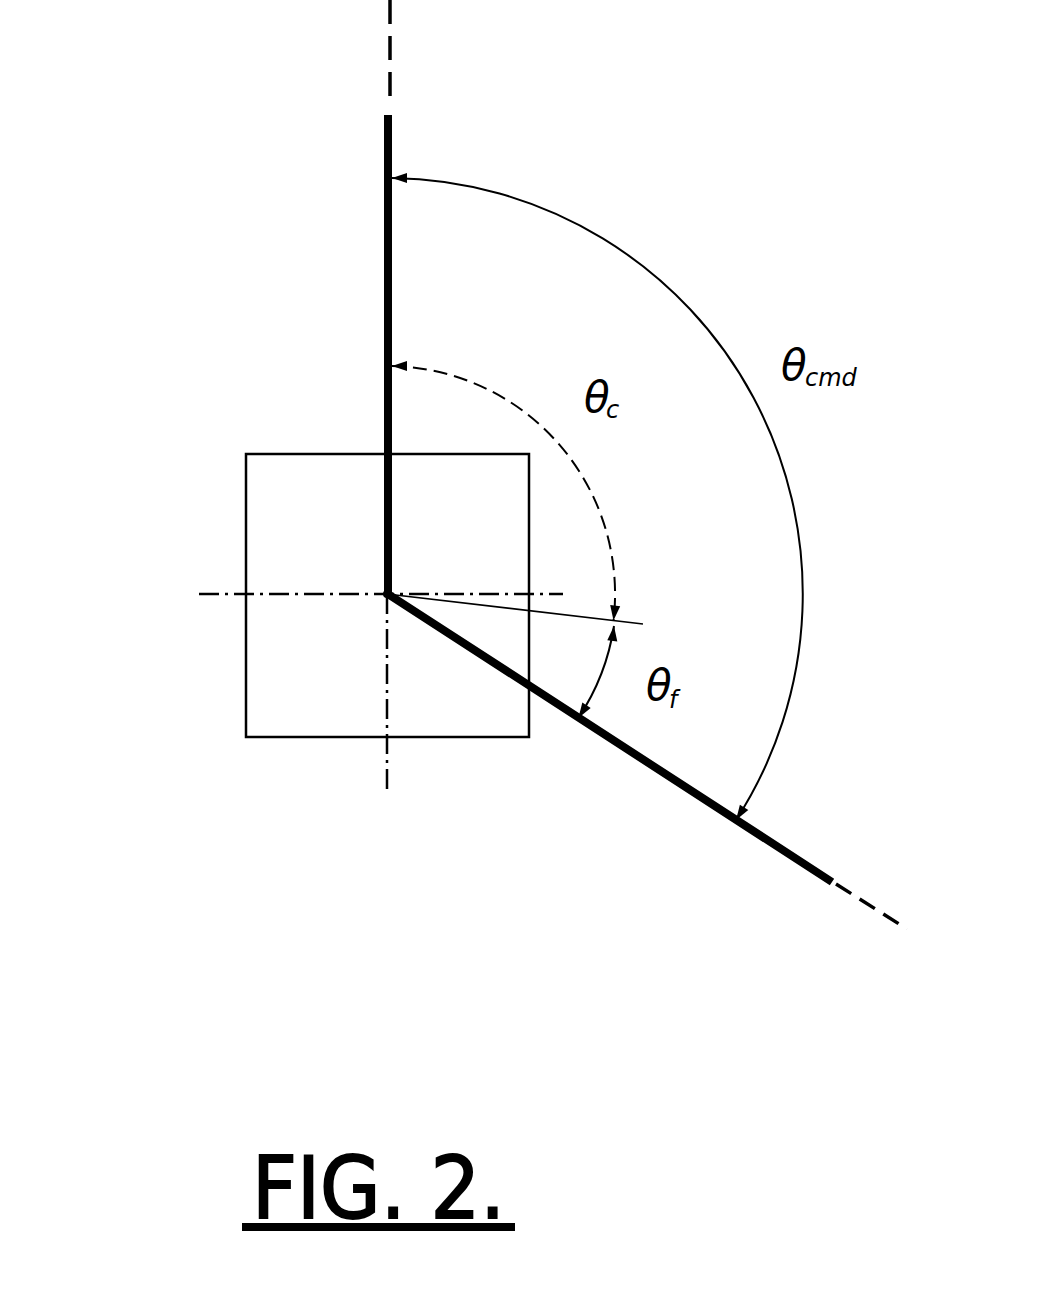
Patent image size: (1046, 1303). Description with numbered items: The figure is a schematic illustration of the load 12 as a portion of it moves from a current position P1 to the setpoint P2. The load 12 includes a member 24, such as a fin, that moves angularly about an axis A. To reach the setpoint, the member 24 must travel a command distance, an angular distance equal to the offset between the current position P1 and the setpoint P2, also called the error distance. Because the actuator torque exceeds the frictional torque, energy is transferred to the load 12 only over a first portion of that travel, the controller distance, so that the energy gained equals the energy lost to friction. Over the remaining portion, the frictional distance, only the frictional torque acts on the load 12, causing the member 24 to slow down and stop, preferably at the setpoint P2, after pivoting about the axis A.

The load 12 is at (245, 545).
The member 24 is at (380, 318).
The current position P1 is at (345, 52).
The setpoint P2 is at (838, 920).
The axis A is at (412, 568).